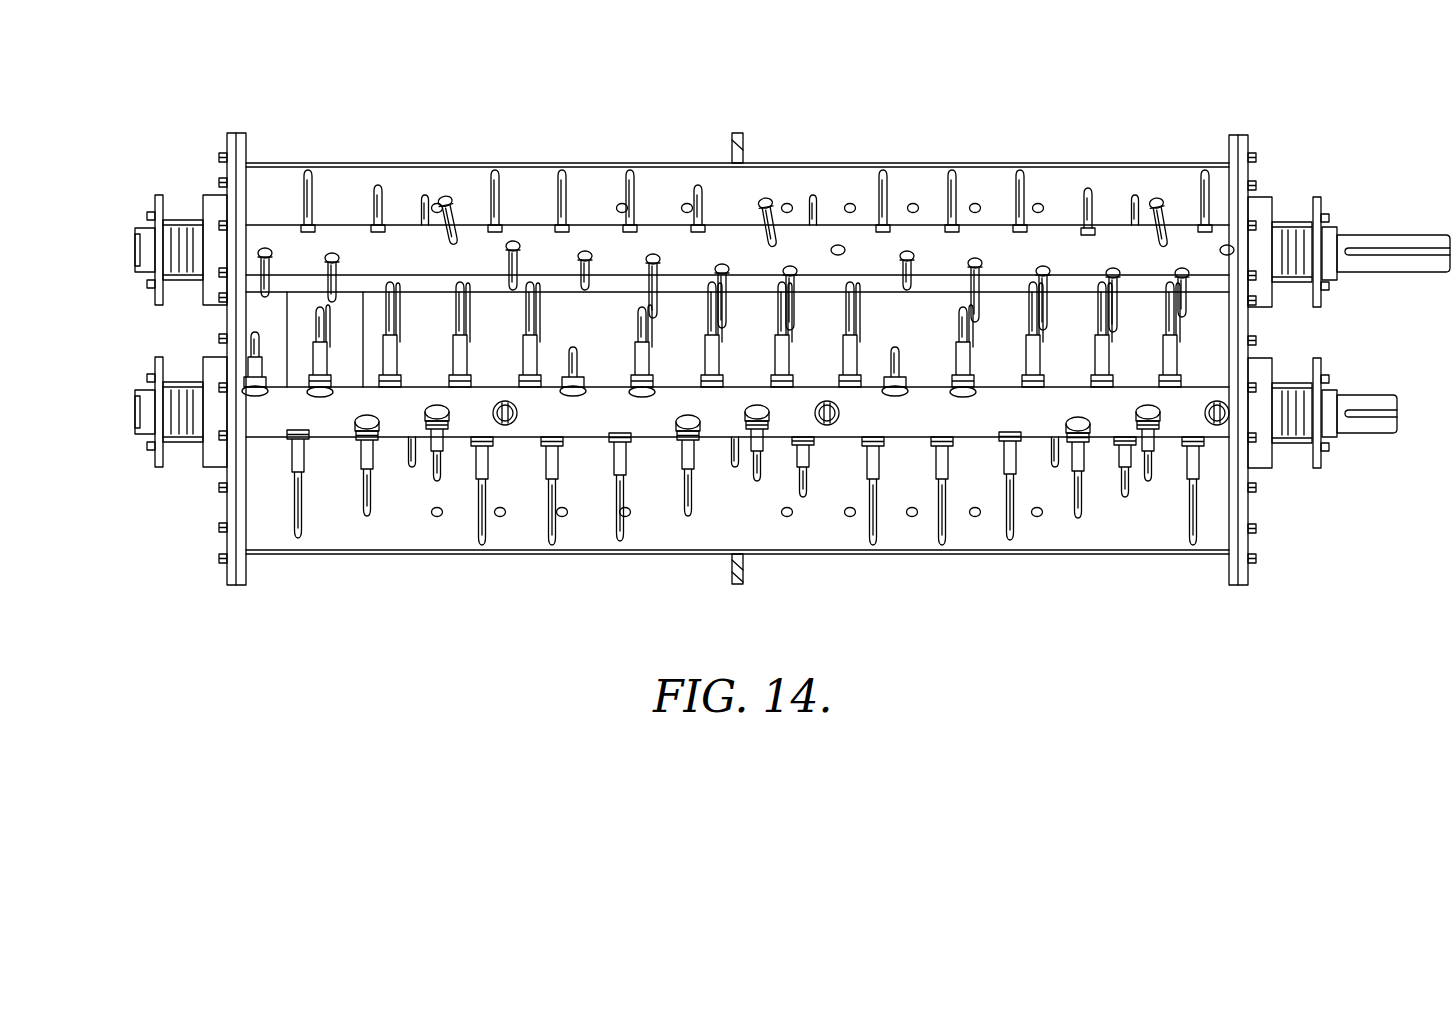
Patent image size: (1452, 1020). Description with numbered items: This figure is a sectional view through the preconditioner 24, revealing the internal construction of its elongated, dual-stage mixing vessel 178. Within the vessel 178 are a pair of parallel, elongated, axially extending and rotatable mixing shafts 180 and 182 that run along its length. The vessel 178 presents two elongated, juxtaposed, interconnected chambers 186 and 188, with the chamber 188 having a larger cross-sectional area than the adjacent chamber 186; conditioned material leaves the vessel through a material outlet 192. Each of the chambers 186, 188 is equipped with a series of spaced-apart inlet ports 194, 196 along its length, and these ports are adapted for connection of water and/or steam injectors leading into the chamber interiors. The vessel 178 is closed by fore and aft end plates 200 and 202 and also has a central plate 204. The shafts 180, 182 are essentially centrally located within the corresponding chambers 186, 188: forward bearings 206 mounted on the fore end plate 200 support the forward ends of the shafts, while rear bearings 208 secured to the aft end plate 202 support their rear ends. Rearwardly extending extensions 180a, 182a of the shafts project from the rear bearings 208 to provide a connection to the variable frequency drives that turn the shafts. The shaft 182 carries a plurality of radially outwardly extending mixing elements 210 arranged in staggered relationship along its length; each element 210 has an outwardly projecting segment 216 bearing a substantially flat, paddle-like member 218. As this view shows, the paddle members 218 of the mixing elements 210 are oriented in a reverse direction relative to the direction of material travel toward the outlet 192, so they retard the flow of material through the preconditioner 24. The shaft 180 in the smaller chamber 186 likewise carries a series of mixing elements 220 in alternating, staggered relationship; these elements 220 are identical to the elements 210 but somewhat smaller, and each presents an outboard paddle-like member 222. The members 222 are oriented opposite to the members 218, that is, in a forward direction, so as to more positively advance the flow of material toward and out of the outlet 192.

The preconditioner 24 is at (590, 98).
The mixing vessel 178 is at (753, 373).
The mixing shaft 180 is at (746, 208).
The shaft extension 180a is at (1355, 253).
The mixing shaft 182 is at (735, 455).
The shaft extension 182a is at (1355, 425).
The chamber 186 is at (1105, 165).
The chamber 188 is at (925, 553).
The material outlet 192 is at (290, 310).
The inlet ports 194 is at (686, 203).
The inlet ports 196 is at (850, 517).
The fore end plate 200 is at (235, 507).
The aft end plate 202 is at (1245, 512).
The central plate 204 is at (741, 148).
The forward bearings 206 is at (205, 295).
The rear bearings 208 is at (1282, 293).
The mixing elements 210 is at (545, 560).
The outwardly projecting segment 216 is at (700, 450).
The paddle-like member 218 is at (556, 533).
The mixing elements 220 is at (962, 158).
The paddle-like member 222 is at (962, 190).